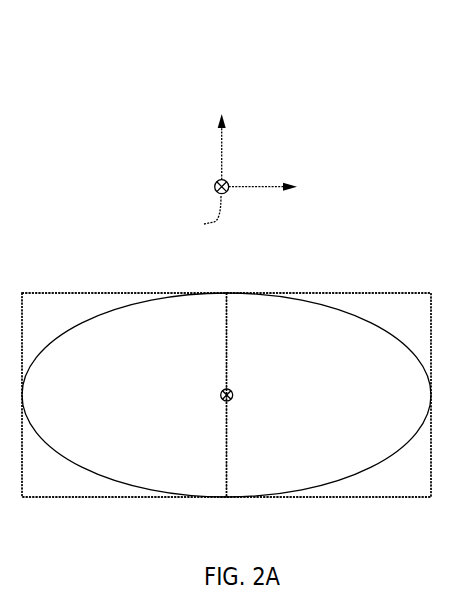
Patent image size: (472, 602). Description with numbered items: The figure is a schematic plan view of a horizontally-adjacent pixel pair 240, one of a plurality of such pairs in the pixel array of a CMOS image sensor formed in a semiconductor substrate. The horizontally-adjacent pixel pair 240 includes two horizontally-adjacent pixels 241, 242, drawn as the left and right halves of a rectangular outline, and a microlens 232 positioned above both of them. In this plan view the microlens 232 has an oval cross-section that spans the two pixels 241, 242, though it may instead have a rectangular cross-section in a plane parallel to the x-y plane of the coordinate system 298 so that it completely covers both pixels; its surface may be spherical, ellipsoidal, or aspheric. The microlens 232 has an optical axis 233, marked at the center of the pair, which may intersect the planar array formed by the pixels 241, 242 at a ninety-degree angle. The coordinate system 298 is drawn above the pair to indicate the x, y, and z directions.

The horizontally-adjacent pixel pair 240 is at (121, 76).
The pixel 241 is at (77, 497).
The pixel 242 is at (391, 497).
The microlens 232 is at (118, 307).
The optical axis 233 is at (227, 402).
The coordinate system 298 is at (266, 224).